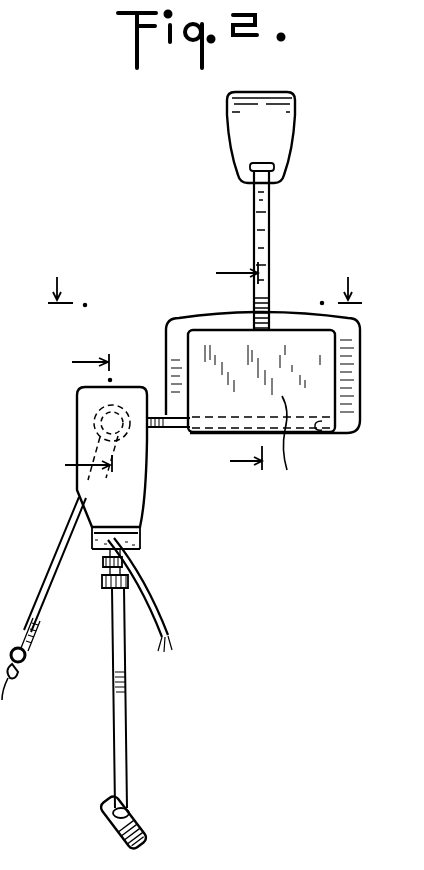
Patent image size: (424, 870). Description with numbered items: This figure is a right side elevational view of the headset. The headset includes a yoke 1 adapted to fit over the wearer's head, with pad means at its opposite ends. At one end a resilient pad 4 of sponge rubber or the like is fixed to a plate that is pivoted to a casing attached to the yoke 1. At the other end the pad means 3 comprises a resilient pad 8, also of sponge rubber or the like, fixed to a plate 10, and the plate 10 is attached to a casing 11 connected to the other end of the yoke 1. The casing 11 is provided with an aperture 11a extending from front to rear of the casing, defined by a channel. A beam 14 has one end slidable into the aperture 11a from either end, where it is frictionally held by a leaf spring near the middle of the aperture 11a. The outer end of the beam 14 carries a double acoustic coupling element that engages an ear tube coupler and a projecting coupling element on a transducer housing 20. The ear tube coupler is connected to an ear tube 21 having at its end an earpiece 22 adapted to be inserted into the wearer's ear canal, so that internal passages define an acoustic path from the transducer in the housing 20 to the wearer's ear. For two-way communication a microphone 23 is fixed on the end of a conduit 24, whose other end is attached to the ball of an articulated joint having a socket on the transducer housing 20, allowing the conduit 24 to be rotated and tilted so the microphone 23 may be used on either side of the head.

The yoke 1 is at (262, 221).
The pad means 3 is at (205, 278).
The resilient pad 4 is at (229, 367).
The resilient pad 8 is at (77, 418).
The plate 10 is at (183, 321).
The casing 11 is at (261, 410).
The aperture 11a is at (325, 432).
The beam 14 is at (162, 432).
The transducer housing 20 is at (125, 511).
The ear tube 21 is at (52, 580).
The earpiece 22 is at (18, 690).
The microphone 23 is at (145, 828).
The conduit 24 is at (118, 737).